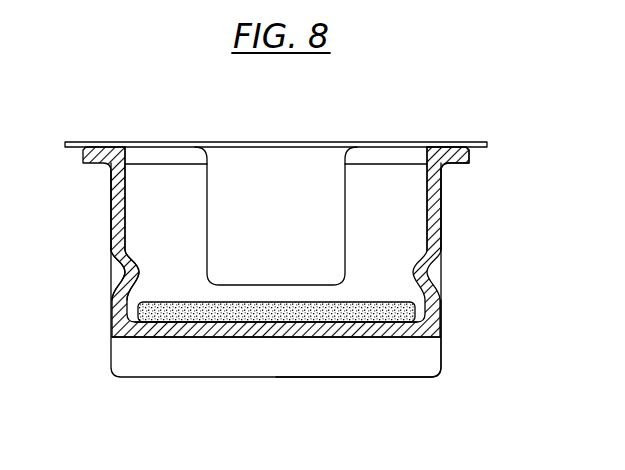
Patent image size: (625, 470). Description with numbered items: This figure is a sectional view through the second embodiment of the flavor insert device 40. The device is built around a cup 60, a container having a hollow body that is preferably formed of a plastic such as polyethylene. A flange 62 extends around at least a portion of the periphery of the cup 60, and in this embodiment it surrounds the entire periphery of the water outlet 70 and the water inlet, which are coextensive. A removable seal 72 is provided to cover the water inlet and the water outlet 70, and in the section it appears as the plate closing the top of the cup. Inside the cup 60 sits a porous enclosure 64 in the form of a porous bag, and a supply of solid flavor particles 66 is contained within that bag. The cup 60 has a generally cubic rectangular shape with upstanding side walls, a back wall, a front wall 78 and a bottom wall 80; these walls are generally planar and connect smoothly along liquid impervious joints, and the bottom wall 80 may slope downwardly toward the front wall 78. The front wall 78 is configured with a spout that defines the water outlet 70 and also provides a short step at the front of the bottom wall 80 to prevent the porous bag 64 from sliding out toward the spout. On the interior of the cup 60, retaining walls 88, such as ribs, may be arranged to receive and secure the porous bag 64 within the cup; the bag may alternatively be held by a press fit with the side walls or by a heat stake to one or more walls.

The flavor insert device 40 is at (482, 388).
The cup 60 is at (127, 388).
The flange 62 is at (463, 167).
The porous enclosure 64 is at (443, 327).
The solid flavor particles 66 is at (265, 308).
The water outlet 70 is at (208, 180).
The removable seal 72 is at (323, 140).
The front wall 78 is at (392, 183).
The bottom wall 80 is at (348, 340).
The retaining walls 88 is at (133, 262).